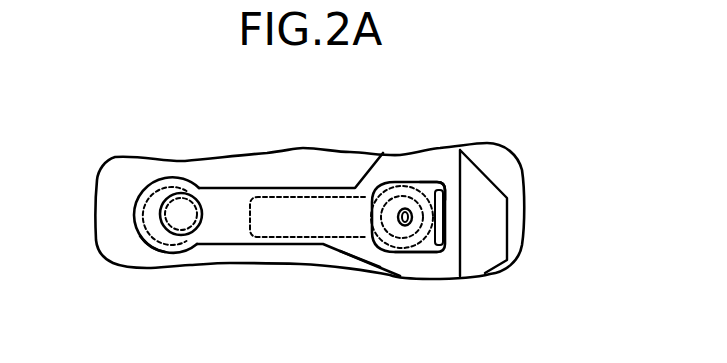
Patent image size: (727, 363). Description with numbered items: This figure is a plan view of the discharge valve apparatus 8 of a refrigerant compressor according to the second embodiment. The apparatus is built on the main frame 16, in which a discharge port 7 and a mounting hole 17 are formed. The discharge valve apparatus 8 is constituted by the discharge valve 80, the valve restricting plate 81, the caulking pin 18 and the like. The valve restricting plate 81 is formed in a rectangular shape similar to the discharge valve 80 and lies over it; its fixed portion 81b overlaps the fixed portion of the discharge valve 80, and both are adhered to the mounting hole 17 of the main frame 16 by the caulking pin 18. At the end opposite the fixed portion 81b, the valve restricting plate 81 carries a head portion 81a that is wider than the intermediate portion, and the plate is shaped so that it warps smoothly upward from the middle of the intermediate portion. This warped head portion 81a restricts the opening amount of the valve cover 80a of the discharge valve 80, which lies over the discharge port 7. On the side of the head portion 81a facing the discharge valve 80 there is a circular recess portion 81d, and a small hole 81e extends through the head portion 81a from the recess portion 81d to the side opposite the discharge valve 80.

The discharge port 7 is at (396, 208).
The discharge valve apparatus 8 is at (305, 162).
The main frame 16 is at (502, 234).
The mounting hole 17 is at (187, 203).
The caulking pin 18 is at (184, 222).
The discharge valve 80 is at (272, 196).
The valve cover 80a is at (399, 182).
The valve restricting plate 81 is at (270, 242).
The head portion 81a is at (403, 254).
The fixed portion 81b is at (163, 245).
The circular recess portion 81d is at (438, 180).
The small hole 81e is at (380, 243).